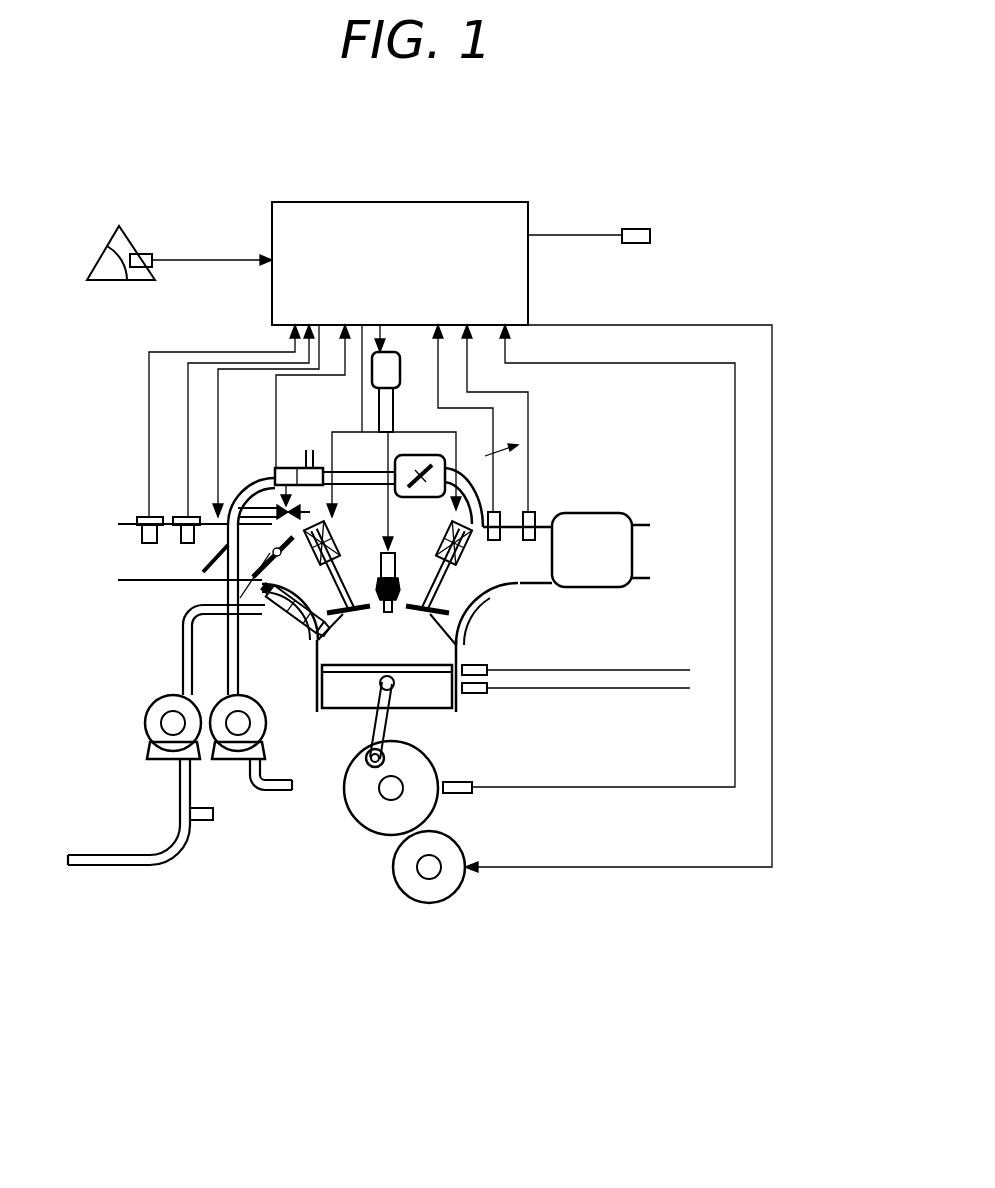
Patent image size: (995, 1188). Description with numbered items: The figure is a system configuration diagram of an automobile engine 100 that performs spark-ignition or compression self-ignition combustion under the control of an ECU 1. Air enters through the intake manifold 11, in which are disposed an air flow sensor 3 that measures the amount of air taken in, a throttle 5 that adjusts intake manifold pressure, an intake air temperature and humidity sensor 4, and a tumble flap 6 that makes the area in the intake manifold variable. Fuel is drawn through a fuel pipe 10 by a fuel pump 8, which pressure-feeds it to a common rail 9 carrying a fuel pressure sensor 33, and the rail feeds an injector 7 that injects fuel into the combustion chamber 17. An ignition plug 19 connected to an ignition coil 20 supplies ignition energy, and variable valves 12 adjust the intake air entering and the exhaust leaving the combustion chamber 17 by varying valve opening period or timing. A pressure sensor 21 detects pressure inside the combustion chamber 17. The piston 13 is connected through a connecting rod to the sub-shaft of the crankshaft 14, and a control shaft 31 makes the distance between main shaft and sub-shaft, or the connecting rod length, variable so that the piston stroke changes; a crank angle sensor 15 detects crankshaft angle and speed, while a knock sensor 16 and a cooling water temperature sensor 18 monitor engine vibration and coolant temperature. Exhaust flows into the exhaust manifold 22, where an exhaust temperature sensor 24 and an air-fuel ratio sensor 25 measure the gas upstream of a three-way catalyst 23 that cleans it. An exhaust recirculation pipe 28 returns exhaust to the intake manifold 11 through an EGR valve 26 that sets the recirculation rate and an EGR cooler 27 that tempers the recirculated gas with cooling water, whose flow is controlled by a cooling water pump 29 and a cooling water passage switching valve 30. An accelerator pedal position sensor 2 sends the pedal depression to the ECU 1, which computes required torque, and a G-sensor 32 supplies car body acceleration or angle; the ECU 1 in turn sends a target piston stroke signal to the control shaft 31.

The ECU 1 is at (393, 203).
The accelerator pedal position sensor 2 is at (150, 256).
The air flow sensor 3 is at (140, 517).
The intake air temperature and humidity sensor 4 is at (166, 517).
The throttle 5 is at (207, 550).
The tumble flap 6 is at (237, 605).
The injector 7 is at (305, 622).
The fuel pump 8 is at (160, 760).
The common rail 9 is at (182, 653).
The fuel pipe 10 is at (124, 862).
The intake manifold 11 is at (122, 583).
The variable valves 12 is at (465, 605).
The piston 13 is at (343, 690).
The crankshaft 14 is at (388, 795).
The crank angle sensor 15 is at (462, 795).
The knock sensor 16 is at (490, 678).
The combustion chamber 17 is at (392, 683).
The cooling water temperature sensor 18 is at (492, 690).
The ignition plug 19 is at (383, 553).
The ignition coil 20 is at (390, 372).
The pressure sensor 21 is at (395, 553).
The exhaust manifold 22 is at (520, 580).
The three-way catalyst 23 is at (618, 590).
The exhaust temperature sensor 24 is at (500, 512).
The air-fuel ratio sensor 25 is at (540, 510).
The EGR valve 26 is at (433, 485).
The EGR cooler 27 is at (322, 466).
The exhaust recirculation pipe 28 is at (260, 470).
The cooling water pump 29 is at (250, 745).
The cooling water passage switching valve 30 is at (287, 466).
The control shaft 31 is at (442, 885).
The G-sensor 32 is at (640, 243).
The fuel pressure sensor 33 is at (206, 821).
The engine 100 is at (605, 940).